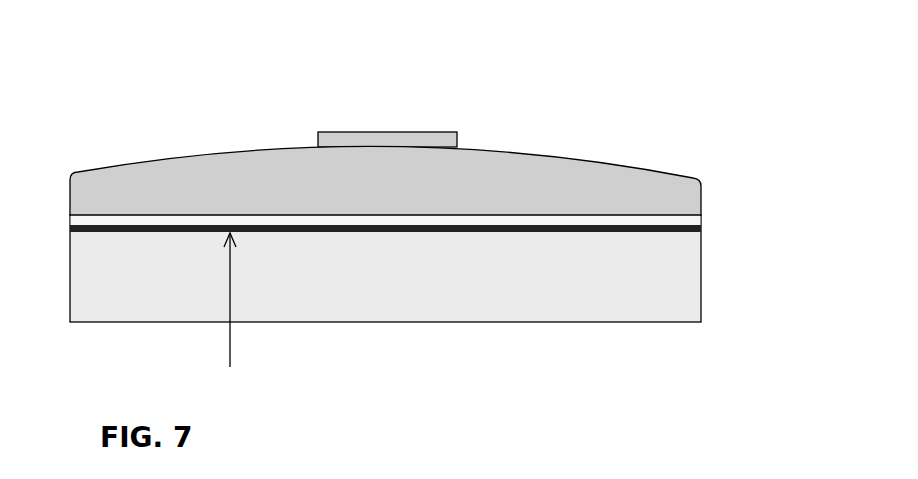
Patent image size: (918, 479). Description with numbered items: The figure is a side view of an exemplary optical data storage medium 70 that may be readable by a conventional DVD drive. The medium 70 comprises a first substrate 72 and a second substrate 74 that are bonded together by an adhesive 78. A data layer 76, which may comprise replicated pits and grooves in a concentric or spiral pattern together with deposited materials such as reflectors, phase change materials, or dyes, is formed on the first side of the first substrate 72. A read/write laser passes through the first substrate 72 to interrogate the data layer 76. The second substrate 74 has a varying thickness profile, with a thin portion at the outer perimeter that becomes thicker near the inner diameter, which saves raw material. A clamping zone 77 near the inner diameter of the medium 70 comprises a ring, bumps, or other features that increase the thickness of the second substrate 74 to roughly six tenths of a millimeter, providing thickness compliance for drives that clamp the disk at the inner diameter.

The optical data storage medium 70 is at (449, 194).
The first substrate 72 is at (70, 290).
The second substrate 74 is at (607, 157).
The data layer 76 is at (703, 229).
The clamping zone 77 is at (318, 134).
The adhesive 78 is at (693, 220).